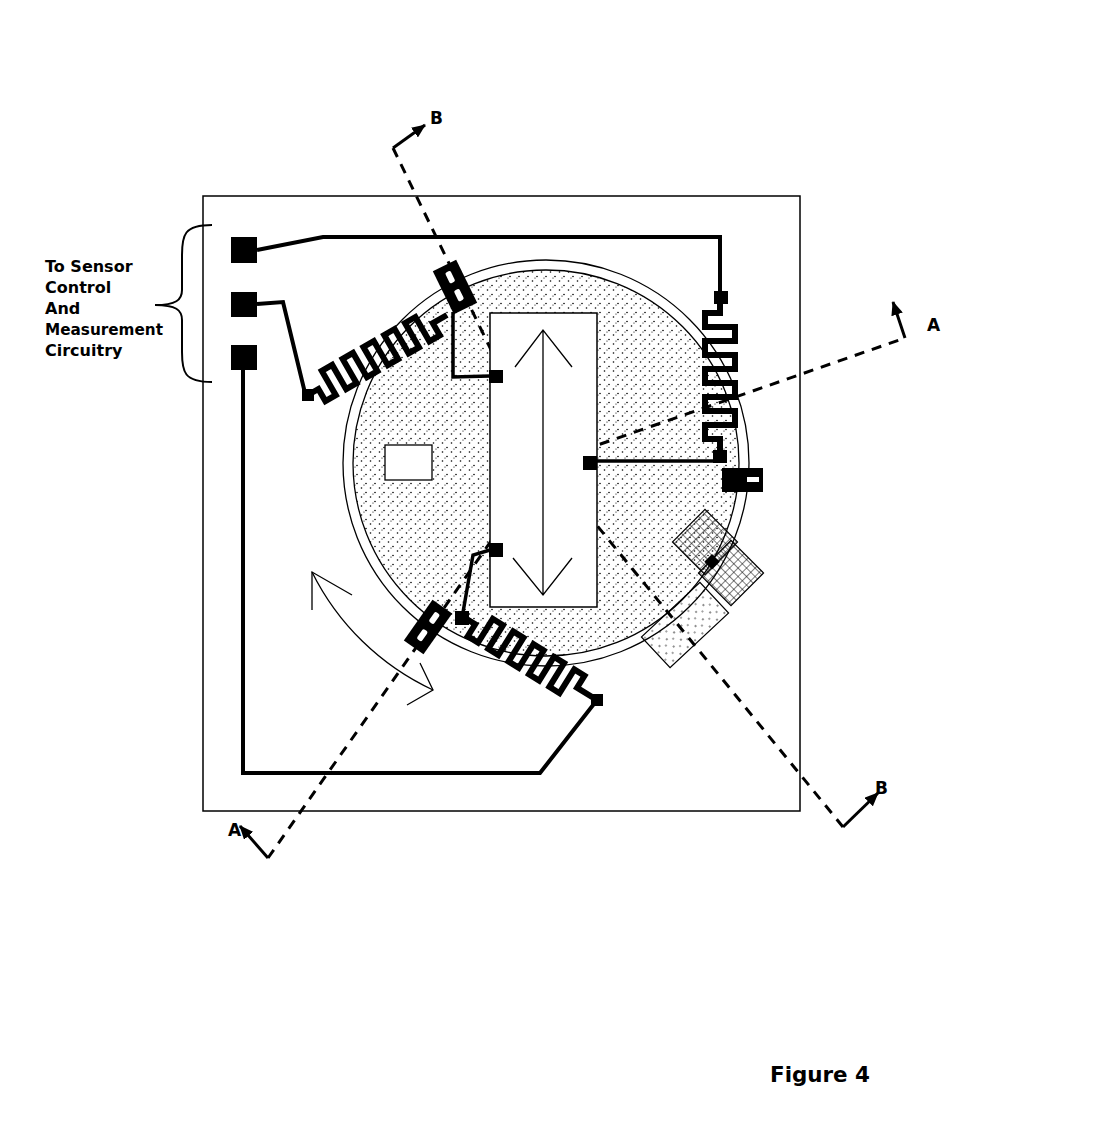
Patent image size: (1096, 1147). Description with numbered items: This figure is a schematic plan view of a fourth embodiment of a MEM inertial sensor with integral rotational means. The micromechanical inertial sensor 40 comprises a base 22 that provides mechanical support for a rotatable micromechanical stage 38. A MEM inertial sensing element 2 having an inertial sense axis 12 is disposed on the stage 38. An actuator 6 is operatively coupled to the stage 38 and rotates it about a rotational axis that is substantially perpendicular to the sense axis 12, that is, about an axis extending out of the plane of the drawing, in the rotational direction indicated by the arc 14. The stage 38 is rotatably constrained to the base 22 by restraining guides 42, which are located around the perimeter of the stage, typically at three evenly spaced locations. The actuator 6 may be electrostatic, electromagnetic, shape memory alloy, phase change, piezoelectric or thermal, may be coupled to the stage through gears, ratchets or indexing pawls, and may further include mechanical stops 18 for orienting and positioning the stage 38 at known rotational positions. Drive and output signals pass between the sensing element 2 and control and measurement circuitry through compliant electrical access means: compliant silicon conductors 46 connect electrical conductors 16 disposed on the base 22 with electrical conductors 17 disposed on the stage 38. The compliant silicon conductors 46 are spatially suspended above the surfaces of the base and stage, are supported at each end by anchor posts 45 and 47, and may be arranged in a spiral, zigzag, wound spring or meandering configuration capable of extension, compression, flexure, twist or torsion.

The micromechanical inertial sensor 40 is at (722, 74).
The base 22 is at (764, 791).
The rotatable micromechanical stage 38 is at (420, 473).
The MEM inertial sensing element 2 is at (574, 404).
The inertial sense axis 12 is at (549, 344).
The anchor post 47 is at (724, 292).
The compliant silicon conductors 46 is at (738, 388).
The anchor post 45 is at (728, 451).
The restraining guides 42 is at (765, 480).
The mechanical stops 18 is at (754, 568).
The actuator 6 is at (706, 612).
The electrical conductors 16 is at (241, 577).
The electrical conductors 17 is at (465, 577).
The arc 14 is at (363, 651).